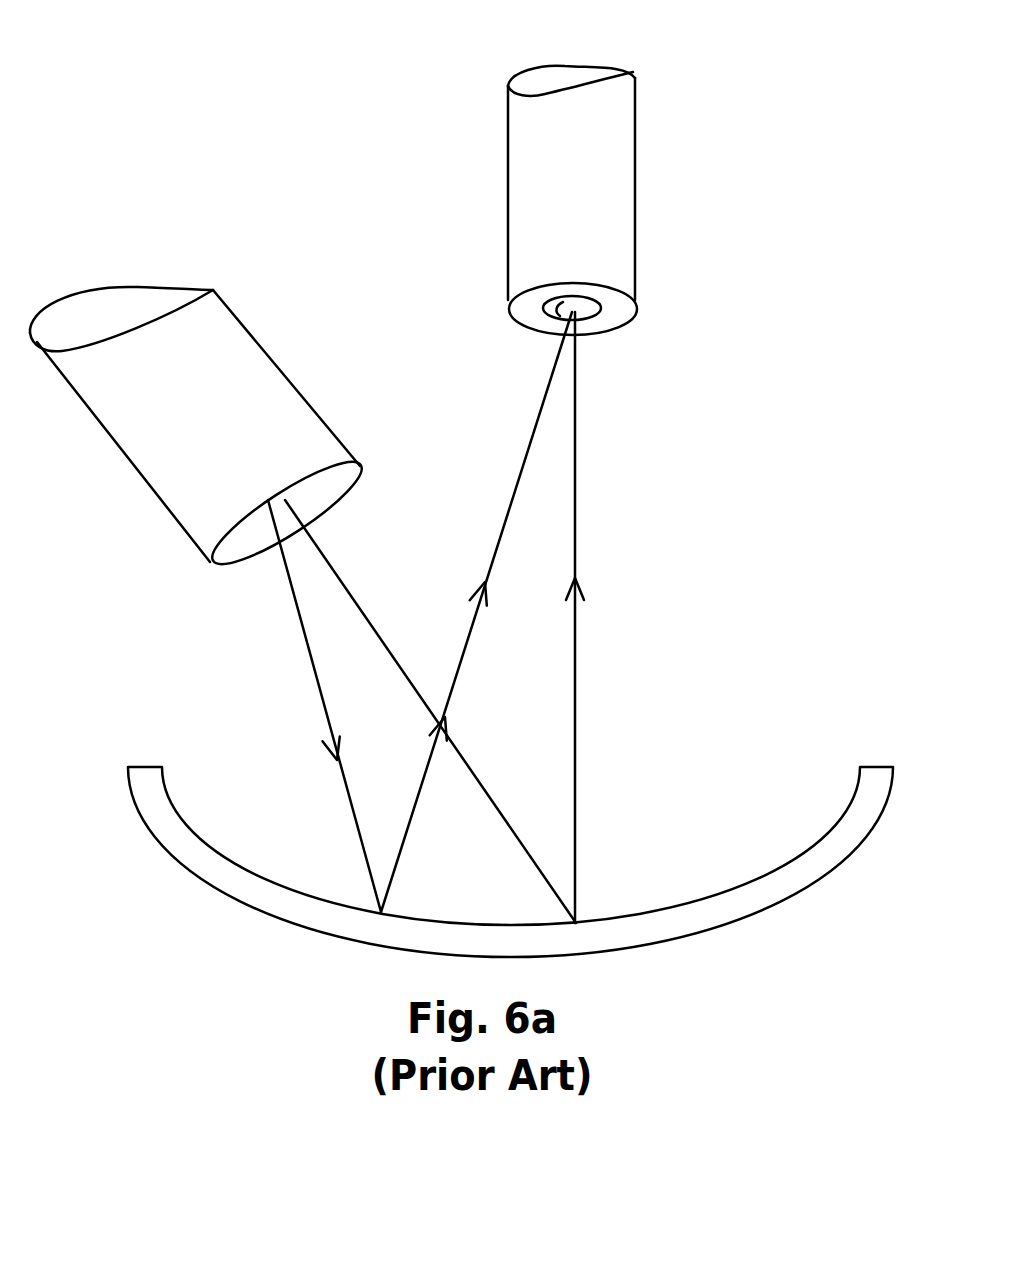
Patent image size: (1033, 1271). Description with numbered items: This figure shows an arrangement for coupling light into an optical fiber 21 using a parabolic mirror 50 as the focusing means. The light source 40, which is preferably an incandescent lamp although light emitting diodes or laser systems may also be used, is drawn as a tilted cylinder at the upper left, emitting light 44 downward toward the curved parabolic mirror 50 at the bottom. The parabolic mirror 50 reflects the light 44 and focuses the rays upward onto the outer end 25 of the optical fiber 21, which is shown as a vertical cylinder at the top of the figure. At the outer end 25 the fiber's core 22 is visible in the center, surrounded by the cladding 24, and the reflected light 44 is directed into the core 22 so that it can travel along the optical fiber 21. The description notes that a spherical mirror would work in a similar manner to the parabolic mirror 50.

The optical fiber 21 is at (603, 118).
The core 22 is at (546, 314).
The cladding 24 is at (620, 311).
The outer end 25 is at (580, 282).
The light source 40 is at (190, 422).
The light 44 is at (575, 452).
The parabolic mirror 50 is at (765, 893).